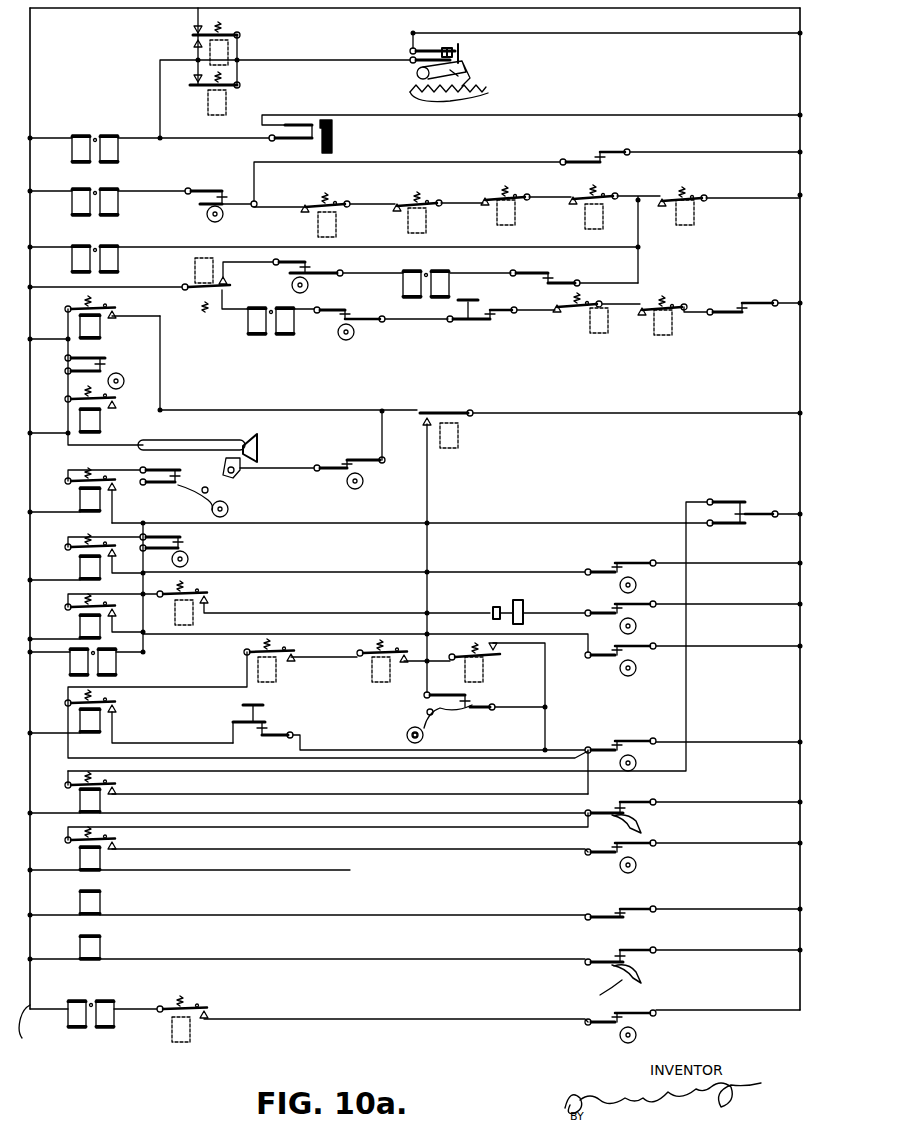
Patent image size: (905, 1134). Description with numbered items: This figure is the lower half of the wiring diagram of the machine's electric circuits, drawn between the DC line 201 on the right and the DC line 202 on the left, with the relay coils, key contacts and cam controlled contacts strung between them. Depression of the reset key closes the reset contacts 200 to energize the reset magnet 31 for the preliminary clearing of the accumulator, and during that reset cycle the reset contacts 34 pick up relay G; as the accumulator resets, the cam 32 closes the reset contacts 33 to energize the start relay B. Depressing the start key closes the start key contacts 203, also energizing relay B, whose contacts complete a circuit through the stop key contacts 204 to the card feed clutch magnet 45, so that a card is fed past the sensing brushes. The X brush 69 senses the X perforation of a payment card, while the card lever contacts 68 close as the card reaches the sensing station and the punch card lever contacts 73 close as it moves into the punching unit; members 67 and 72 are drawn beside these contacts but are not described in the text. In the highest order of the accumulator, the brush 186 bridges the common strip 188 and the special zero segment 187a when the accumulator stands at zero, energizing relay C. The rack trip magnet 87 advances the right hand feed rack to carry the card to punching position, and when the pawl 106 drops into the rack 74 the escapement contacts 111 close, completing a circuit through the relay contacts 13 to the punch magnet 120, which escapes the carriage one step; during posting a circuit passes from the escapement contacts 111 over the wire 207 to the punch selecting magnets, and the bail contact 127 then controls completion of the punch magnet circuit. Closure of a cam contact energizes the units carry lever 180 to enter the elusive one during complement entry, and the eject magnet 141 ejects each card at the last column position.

The DC line 202 is at (32, 36).
The DC line 201 is at (798, 60).
The wire 207 is at (216, 16).
The relay contacts 13 is at (190, 83).
The escapement contacts 111 is at (435, 48).
The pawl 106 is at (462, 75).
The rack 74 is at (485, 95).
The punch magnet 120 is at (78, 150).
The bail contact 127 is at (312, 124).
The reset magnet 31 is at (76, 206).
The eject magnet 141 is at (76, 262).
The reset contacts 200 is at (585, 152).
The rack trip magnet 87 is at (402, 290).
The card feed clutch magnet 45 is at (256, 330).
The stop key contacts 204 is at (500, 320).
The common strip 188 is at (220, 448).
The brush 186 is at (256, 448).
The special segment 187a is at (238, 478).
The reset contacts 34 is at (160, 476).
The cam 32 is at (230, 508).
The X brush 69 is at (496, 617).
The start key contacts 203 is at (292, 736).
The reset contacts 33 is at (470, 702).
The card lever contacts 68 is at (635, 808).
The cam lever 67 is at (642, 826).
The punch card lever contacts 73 is at (598, 962).
The cam lever 72 is at (604, 989).
The units carry lever 180 is at (80, 1012).